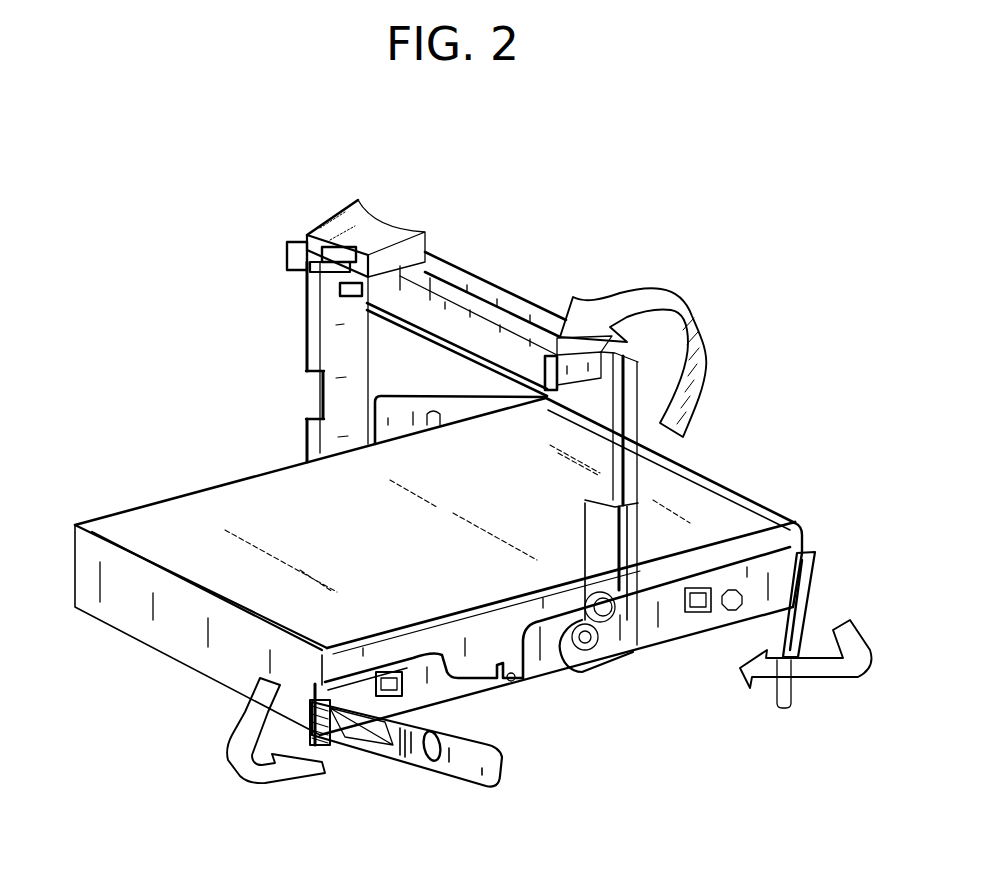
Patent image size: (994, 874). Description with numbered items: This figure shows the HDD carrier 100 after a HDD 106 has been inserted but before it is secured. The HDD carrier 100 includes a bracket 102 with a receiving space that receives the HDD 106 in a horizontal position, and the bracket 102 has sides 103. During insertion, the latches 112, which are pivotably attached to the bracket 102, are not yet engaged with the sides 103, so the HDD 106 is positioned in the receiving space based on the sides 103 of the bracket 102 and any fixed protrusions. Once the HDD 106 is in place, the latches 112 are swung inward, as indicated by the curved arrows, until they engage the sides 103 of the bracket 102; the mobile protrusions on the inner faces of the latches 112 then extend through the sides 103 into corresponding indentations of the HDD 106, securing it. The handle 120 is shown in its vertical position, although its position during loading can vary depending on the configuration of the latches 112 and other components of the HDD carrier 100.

The HDD carrier 100 is at (175, 302).
The bracket 102 is at (740, 563).
The sides 103 is at (535, 663).
The HDD 106 is at (175, 523).
The latches 112 is at (437, 395).
The handle 120 is at (505, 288).